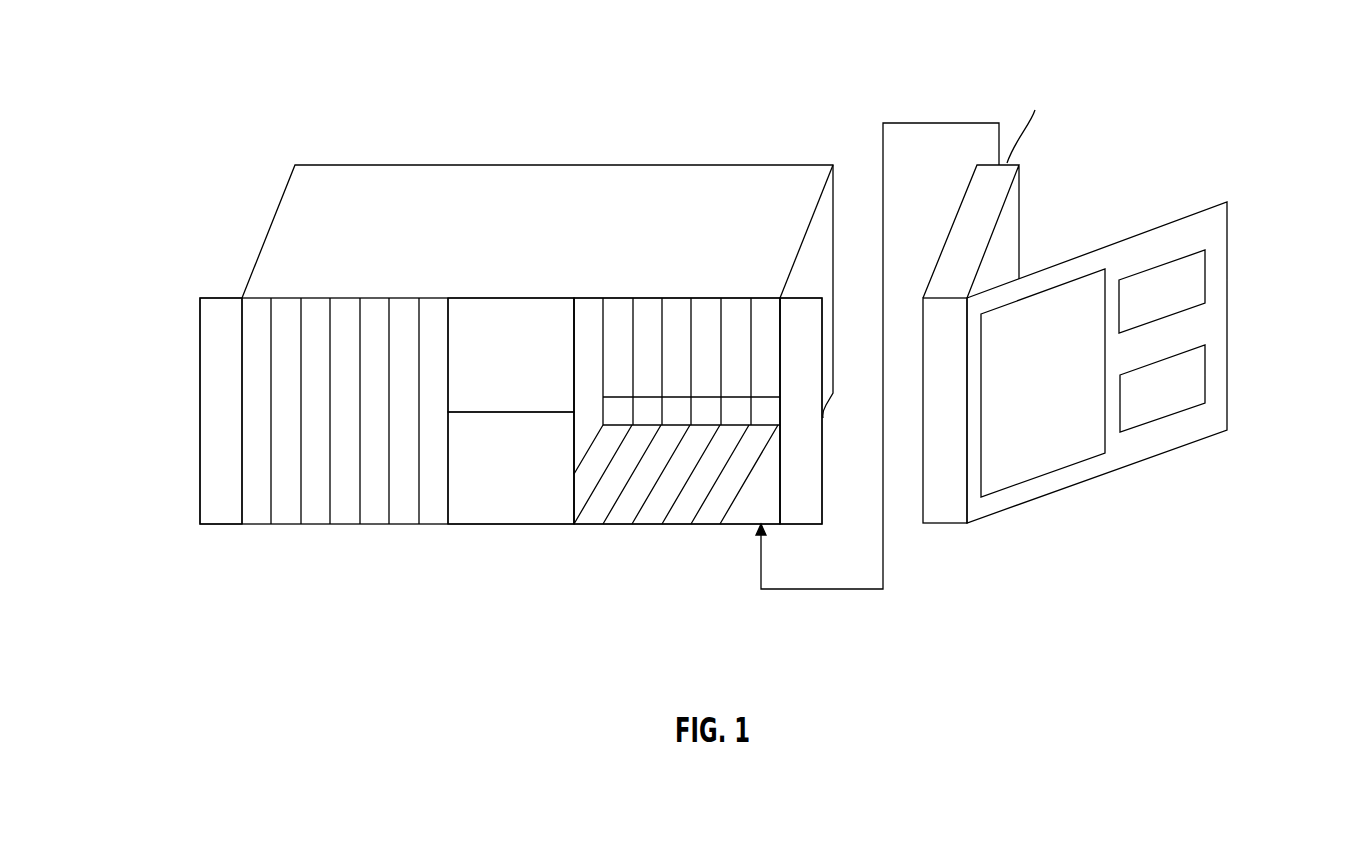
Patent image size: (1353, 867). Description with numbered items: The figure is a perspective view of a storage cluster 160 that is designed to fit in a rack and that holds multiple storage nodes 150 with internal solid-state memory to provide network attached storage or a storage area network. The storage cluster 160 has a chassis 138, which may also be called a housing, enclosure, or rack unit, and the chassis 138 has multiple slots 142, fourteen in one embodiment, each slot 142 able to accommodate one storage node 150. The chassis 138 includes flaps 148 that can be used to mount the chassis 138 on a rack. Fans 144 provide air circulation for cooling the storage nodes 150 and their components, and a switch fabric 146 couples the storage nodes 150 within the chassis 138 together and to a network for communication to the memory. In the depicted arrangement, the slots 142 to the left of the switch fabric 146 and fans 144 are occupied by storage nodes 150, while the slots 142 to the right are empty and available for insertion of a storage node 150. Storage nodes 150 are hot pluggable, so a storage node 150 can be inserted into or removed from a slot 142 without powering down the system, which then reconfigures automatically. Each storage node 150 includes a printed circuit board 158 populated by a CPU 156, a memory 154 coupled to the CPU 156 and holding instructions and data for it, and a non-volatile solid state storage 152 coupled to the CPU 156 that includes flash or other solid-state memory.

The storage cluster 160 is at (217, 63).
The chassis 138 is at (363, 163).
The storage node 150 is at (283, 297).
The flaps 148 is at (200, 412).
The switch fabric 146 is at (518, 297).
The fans 144 is at (512, 525).
The slot 142 is at (743, 525).
The non-volatile solid state storage 152 is at (1043, 473).
The memory 154 is at (1163, 265).
The CPU 156 is at (1205, 372).
The printed circuit board 158 is at (1228, 230).